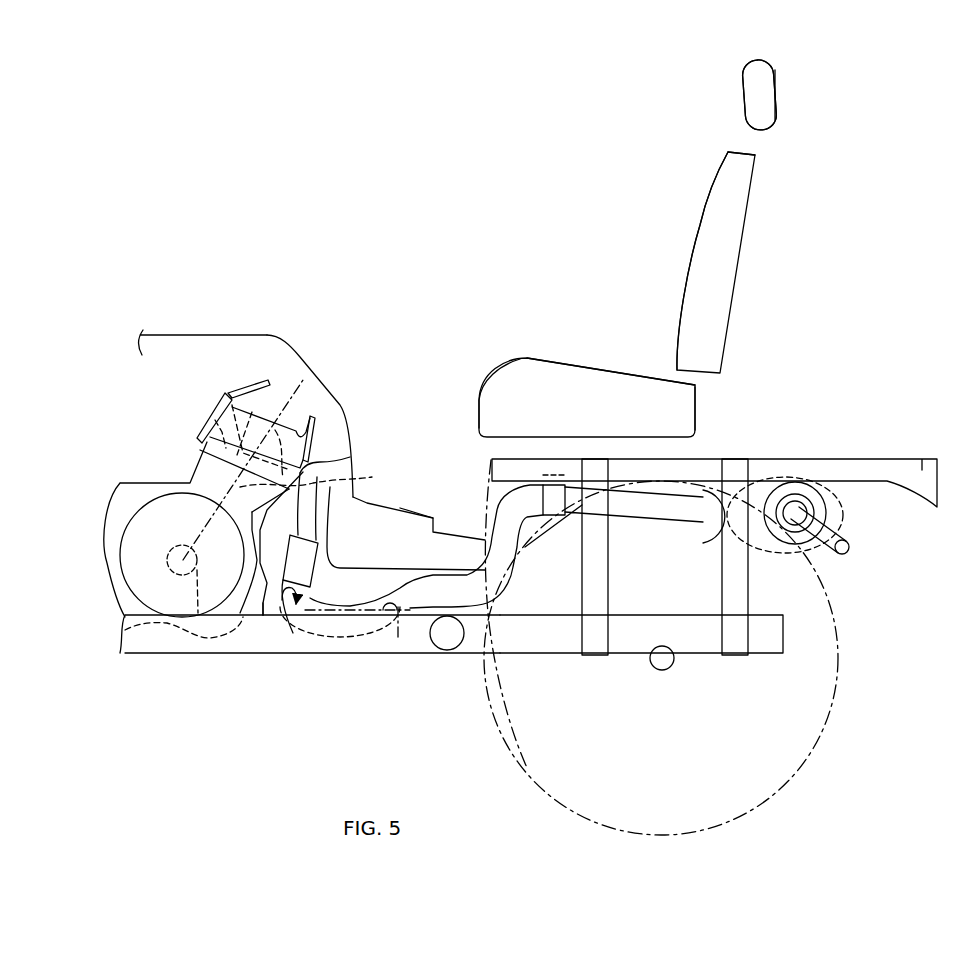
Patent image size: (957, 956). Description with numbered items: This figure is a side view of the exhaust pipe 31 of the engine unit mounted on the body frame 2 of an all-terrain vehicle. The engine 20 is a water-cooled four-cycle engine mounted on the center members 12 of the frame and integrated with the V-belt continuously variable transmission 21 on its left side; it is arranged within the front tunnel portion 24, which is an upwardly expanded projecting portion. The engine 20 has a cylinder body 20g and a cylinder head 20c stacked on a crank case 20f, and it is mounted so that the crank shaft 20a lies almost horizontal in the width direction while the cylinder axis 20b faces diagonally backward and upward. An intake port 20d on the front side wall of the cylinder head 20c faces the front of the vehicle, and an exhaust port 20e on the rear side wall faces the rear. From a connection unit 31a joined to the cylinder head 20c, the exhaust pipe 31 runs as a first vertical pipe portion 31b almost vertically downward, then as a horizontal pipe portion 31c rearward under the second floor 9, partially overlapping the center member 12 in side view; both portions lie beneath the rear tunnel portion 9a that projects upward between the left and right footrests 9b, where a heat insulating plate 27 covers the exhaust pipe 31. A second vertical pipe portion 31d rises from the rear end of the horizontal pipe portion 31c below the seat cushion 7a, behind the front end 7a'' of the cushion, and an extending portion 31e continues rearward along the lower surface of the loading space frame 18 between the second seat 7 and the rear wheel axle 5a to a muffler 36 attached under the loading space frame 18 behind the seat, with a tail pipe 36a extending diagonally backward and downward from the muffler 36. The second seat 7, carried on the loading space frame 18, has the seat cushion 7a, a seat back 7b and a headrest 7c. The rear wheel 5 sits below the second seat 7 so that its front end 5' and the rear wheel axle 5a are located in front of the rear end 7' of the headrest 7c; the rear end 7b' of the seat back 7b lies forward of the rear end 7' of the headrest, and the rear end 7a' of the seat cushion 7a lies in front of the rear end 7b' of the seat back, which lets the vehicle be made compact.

The body frame 2 is at (760, 610).
The rear wheel 5 is at (682, 658).
The front end of rear wheel 5' is at (529, 615).
The rear wheel axle 5a is at (665, 672).
The second seat 7 is at (628, 248).
The rear end of headrest 7' is at (801, 96).
The seat cushion 7a is at (611, 336).
The rear end of seat cushion 7a' is at (733, 408).
The front end of seat cushion 7a'' is at (476, 389).
The seat back 7b is at (682, 261).
The rear end of seat back 7b' is at (778, 156).
The headrest 7c is at (745, 97).
The second floor 9 is at (262, 616).
The rear tunnel portion 9a is at (410, 513).
The footrest 9b is at (400, 652).
The center member 12 is at (148, 655).
The loading space frame 18 is at (782, 455).
The engine 20 is at (255, 375).
The crank shaft 20a is at (198, 615).
The cylinder axis 20b is at (300, 407).
The cylinder head 20c is at (315, 460).
The intake port 20d is at (215, 420).
The exhaust port 20e is at (325, 480).
The crank case 20f is at (162, 485).
The cylinder body 20g is at (235, 430).
The continuously variable transmission 21 is at (141, 476).
The front tunnel portion 24 is at (203, 337).
The heat insulating plate 27 is at (365, 565).
The exhaust pipe 31 is at (467, 565).
The connection unit 31a is at (350, 457).
The first vertical pipe portion 31b is at (279, 543).
The horizontal pipe portion 31c is at (360, 640).
The second vertical pipe portion 31d is at (525, 547).
The extending portion 31e is at (658, 520).
The muffler 36 is at (832, 498).
The tail pipe 36a is at (845, 534).